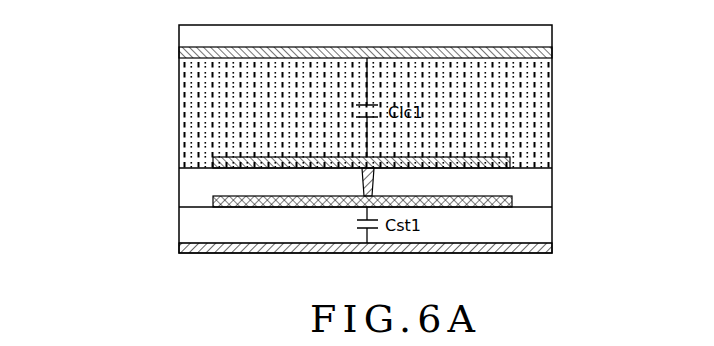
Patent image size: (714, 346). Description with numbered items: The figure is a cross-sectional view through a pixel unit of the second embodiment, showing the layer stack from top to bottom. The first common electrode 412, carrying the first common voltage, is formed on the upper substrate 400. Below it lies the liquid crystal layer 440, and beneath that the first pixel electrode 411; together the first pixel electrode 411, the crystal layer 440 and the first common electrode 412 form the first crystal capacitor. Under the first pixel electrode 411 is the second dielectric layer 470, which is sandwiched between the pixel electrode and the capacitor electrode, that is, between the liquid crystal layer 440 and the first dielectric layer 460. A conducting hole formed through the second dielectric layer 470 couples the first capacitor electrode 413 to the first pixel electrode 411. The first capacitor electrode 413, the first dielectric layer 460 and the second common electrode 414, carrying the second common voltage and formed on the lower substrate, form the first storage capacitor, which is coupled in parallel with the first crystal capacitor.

The upper substrate 400 is at (548, 37).
The liquid crystal layer 440 is at (548, 107).
The first common electrode 412 is at (179, 50).
The first pixel electrode 411 is at (213, 158).
The second dielectric layer 470 is at (548, 193).
The first capacitor electrode 413 is at (213, 199).
The first dielectric layer 460 is at (548, 230).
The second common electrode 414 is at (179, 247).